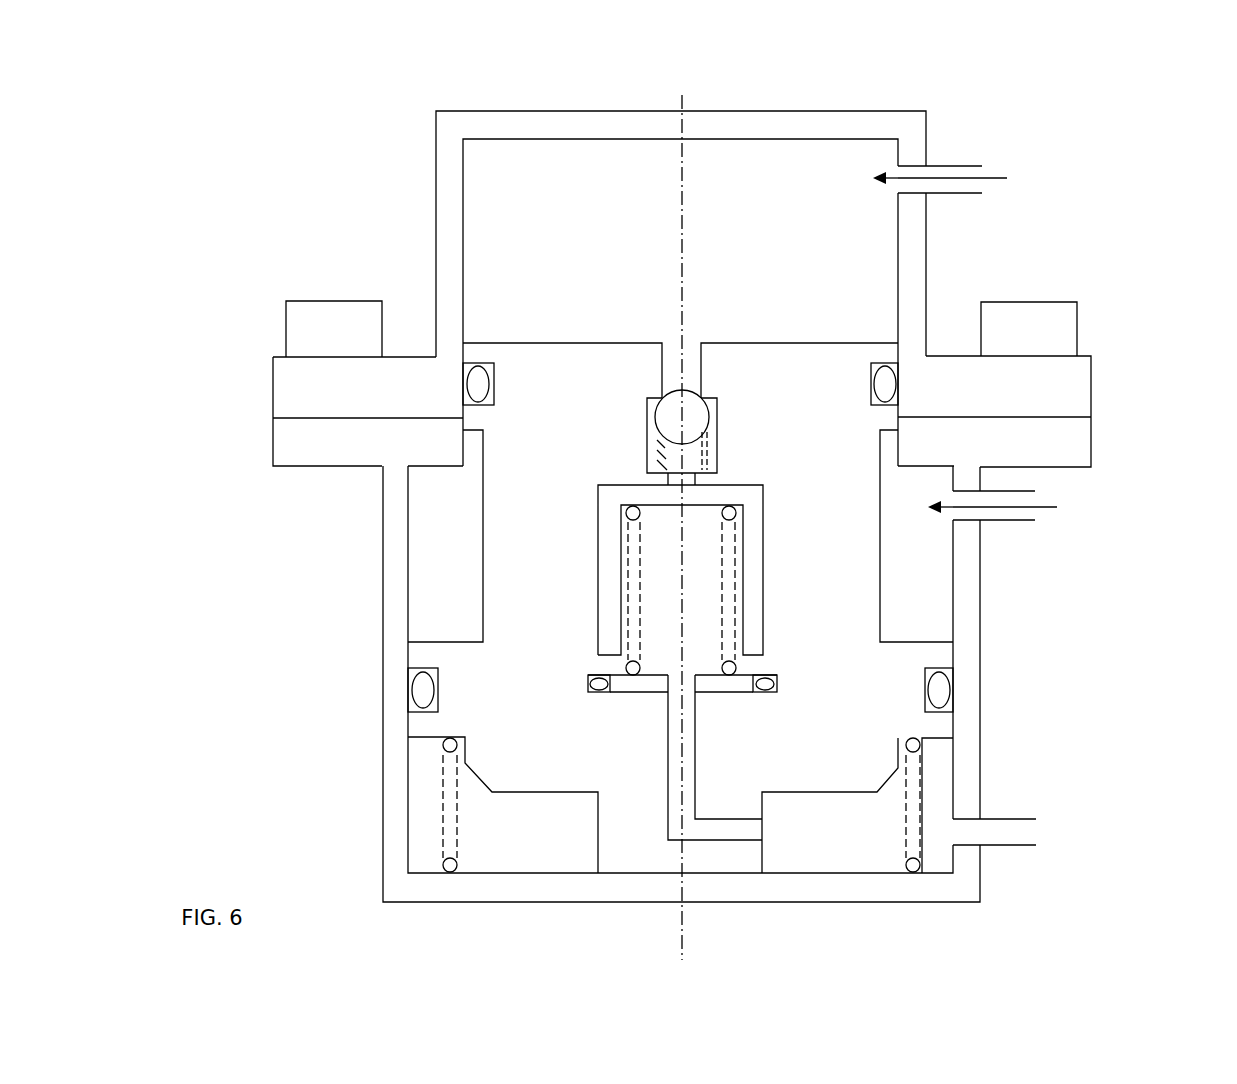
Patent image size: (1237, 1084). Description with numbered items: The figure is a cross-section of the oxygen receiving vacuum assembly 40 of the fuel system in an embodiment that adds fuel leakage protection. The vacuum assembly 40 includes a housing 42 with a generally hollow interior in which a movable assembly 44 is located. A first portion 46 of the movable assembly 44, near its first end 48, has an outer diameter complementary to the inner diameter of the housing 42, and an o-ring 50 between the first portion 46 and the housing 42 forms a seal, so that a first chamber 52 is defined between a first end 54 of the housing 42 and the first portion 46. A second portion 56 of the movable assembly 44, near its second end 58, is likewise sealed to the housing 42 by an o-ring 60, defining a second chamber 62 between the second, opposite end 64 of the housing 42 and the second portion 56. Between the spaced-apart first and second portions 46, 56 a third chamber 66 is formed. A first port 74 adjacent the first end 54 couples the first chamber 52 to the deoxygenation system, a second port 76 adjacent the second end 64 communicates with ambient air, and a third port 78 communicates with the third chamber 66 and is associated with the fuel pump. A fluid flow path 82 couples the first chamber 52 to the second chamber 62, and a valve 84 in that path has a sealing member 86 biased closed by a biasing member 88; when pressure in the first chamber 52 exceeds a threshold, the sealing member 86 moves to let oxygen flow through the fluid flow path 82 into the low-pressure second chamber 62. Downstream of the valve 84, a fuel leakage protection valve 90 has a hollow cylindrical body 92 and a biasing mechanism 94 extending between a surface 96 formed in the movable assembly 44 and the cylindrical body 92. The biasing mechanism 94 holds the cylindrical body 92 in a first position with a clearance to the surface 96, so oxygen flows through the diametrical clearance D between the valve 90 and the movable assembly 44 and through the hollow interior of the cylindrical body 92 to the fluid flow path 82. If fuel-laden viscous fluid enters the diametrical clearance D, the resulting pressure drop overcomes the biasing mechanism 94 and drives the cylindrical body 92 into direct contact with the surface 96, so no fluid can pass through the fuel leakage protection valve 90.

The oxygen receiving vacuum assembly 40 is at (257, 160).
The housing 42 is at (783, 136).
The movable assembly 44 is at (508, 594).
The first portion 46 is at (520, 380).
The first end 48 is at (588, 342).
The o-ring 50 is at (886, 382).
The first chamber 52 is at (588, 232).
The first end 54 is at (860, 143).
The second portion 56 is at (915, 693).
The second end 58 is at (653, 873).
The o-ring 60 is at (424, 690).
The second chamber 62 is at (505, 830).
The second end 64 is at (818, 874).
The third chamber 66 is at (435, 526).
The first port 74 is at (953, 178).
The second port 76 is at (1017, 822).
The third port 78 is at (1020, 504).
The fluid flow path 82 is at (677, 747).
The valve 84 is at (750, 421).
The sealing member 86 is at (690, 410).
The biasing member 88 is at (657, 467).
The fuel leakage protection valve 90 is at (797, 604).
The cylindrical body 92 is at (752, 565).
The biasing mechanism 94 is at (730, 545).
The surface 96 is at (623, 675).
The diametrical clearance D is at (597, 572).